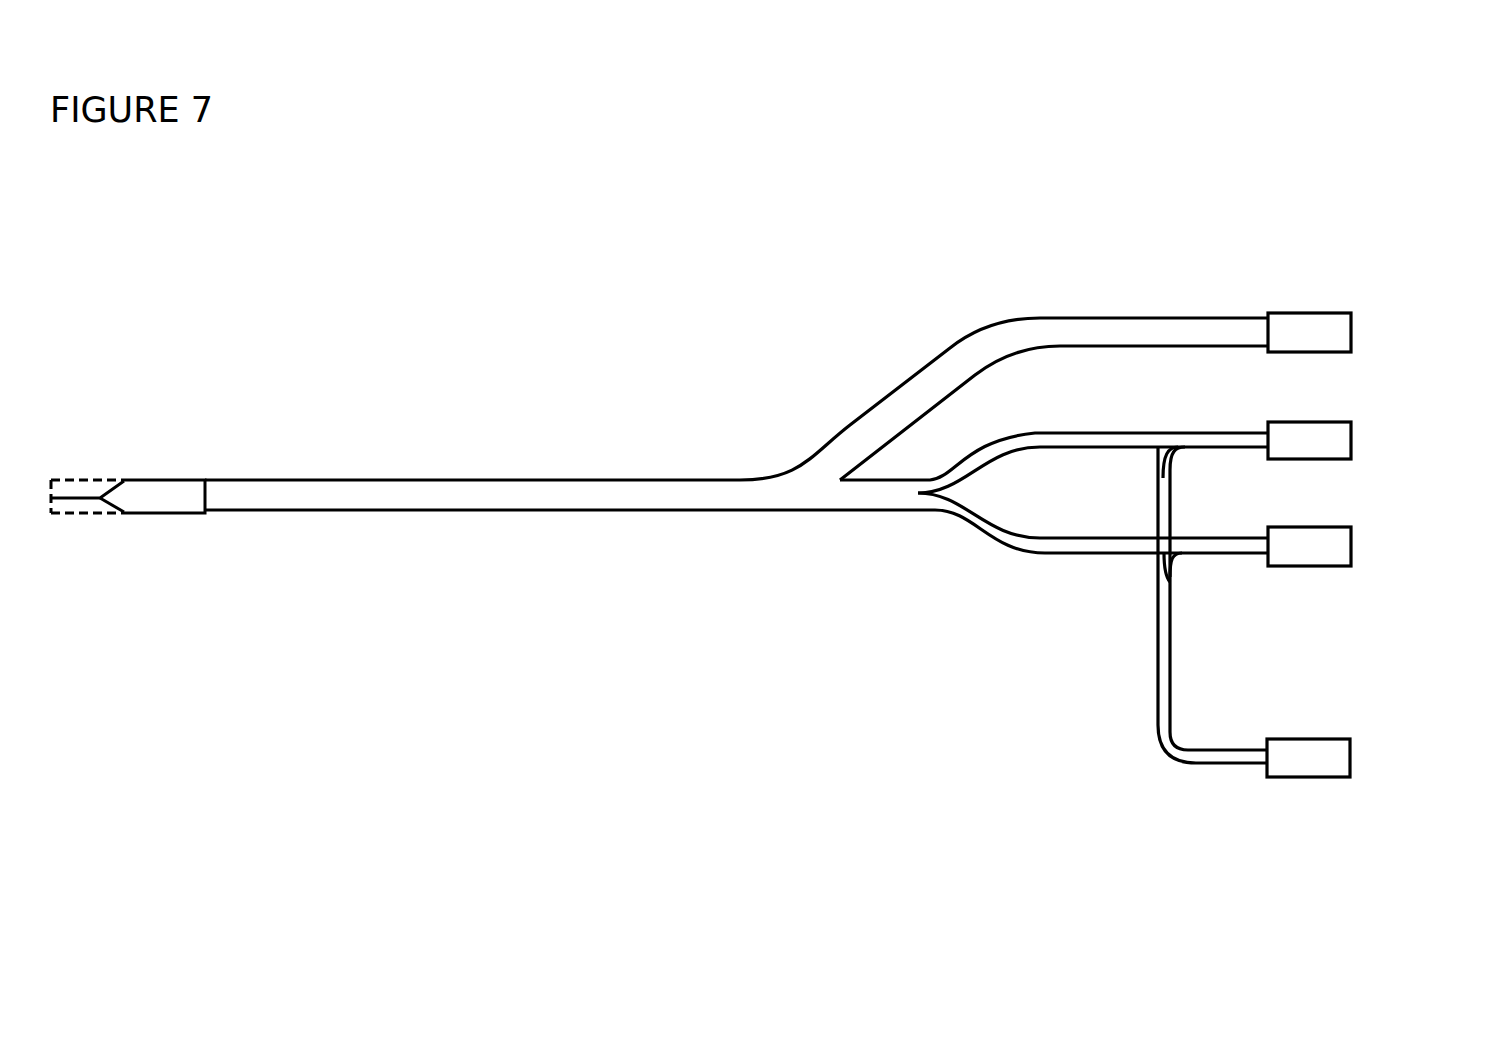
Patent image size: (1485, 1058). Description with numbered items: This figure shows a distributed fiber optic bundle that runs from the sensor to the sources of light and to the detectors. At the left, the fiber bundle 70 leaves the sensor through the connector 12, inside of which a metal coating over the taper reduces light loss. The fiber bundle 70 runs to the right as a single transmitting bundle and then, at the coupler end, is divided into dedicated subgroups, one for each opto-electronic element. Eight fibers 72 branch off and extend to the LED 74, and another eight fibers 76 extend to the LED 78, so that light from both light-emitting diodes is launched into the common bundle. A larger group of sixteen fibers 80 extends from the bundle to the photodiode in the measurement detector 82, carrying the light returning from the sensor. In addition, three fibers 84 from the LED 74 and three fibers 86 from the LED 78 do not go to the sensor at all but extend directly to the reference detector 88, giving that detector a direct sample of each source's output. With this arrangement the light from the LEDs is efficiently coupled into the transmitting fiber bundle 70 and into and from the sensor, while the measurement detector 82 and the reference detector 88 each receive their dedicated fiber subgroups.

The connector 12 is at (100, 518).
The fiber bundle 70 is at (682, 510).
The fibers 72 is at (1057, 432).
The LED 74 is at (1295, 459).
The fibers 76 is at (1127, 557).
The LED 78 is at (1297, 566).
The fibers 80 is at (1110, 318).
The measurement detector 82 is at (1297, 313).
The fibers 84 is at (1157, 493).
The fibers 86 is at (1177, 560).
The reference detector 88 is at (1298, 777).